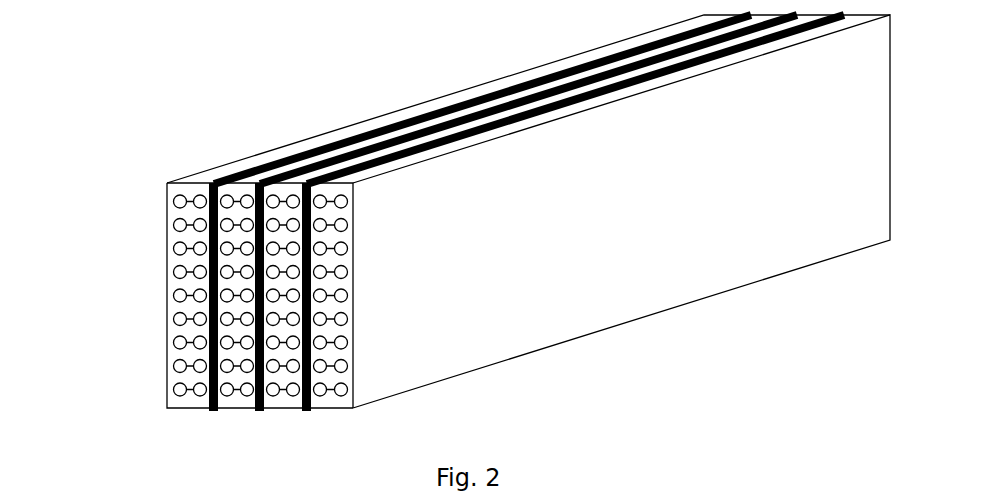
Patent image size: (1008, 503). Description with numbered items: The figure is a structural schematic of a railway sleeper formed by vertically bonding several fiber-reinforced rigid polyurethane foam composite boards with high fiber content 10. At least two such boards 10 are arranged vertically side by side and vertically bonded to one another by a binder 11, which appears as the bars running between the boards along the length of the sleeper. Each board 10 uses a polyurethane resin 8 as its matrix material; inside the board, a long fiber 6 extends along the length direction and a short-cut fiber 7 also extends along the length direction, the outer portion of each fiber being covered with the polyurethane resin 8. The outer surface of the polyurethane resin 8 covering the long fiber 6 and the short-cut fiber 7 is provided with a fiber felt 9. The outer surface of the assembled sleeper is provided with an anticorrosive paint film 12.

The long fiber 6 is at (170, 200).
The short-cut fiber 7 is at (165, 338).
The polyurethane resin 8 is at (165, 260).
The fiber felt 9 is at (167, 373).
The fiber-reinforced rigid polyurethane foam composite board with high fiber content 10 is at (207, 186).
The binder 11 is at (253, 163).
The anticorrosive paint film 12 is at (437, 180).